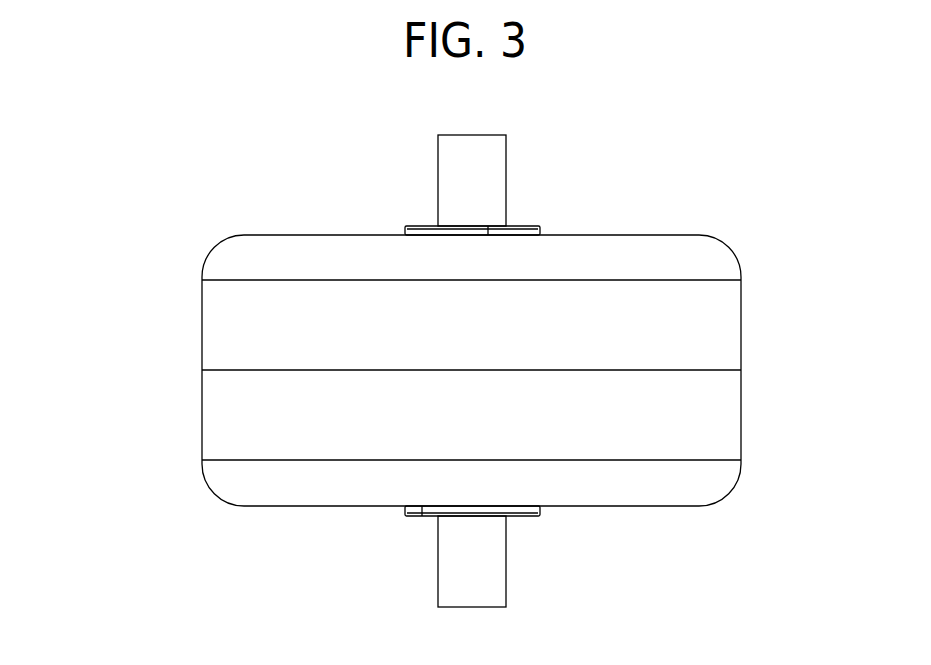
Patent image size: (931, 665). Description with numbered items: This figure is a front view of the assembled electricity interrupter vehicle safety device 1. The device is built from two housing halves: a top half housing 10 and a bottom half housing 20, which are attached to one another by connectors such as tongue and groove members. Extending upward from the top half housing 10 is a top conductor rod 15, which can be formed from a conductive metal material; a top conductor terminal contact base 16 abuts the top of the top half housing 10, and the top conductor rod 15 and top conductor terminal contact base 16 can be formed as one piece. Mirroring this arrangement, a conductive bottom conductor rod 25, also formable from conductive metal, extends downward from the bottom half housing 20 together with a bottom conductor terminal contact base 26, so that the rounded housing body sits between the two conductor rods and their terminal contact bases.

The electricity interrupter vehicle safety device 1 is at (96, 149).
The top half housing 10 is at (715, 332).
The bottom half housing 20 is at (710, 415).
The top conductor rod 15 is at (495, 172).
The top conductor terminal contact base 16 is at (535, 231).
The bottom conductor rod 25 is at (482, 571).
The bottom conductor terminal contact base 26 is at (415, 509).